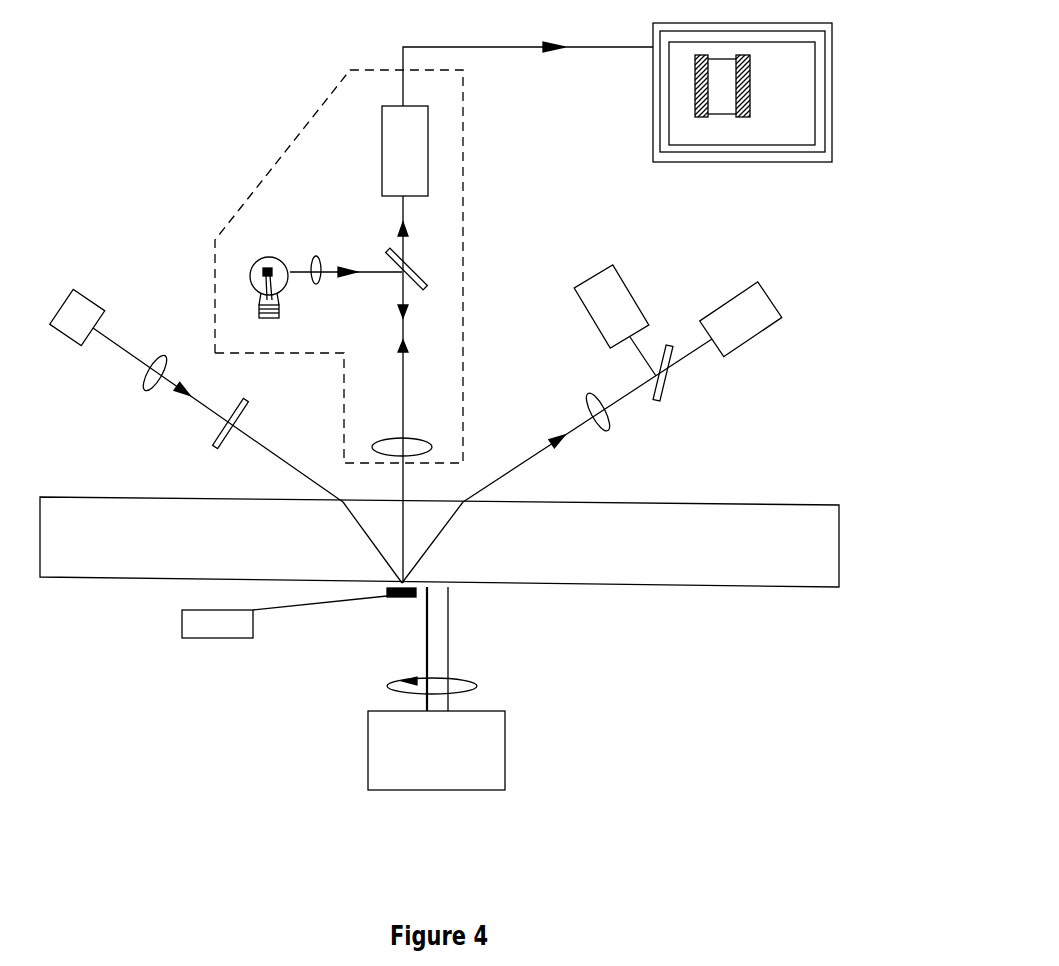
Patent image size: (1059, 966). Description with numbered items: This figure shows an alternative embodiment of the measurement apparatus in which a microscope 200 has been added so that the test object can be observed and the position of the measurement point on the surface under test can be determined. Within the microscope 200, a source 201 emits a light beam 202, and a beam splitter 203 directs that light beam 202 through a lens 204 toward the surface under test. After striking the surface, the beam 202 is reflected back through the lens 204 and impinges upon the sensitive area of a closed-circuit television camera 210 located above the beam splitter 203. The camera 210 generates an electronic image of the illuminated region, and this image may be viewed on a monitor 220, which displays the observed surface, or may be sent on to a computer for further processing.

The microscope 200 is at (263, 173).
The source 201 is at (250, 277).
The light beam 202 is at (318, 284).
The beam splitter 203 is at (382, 258).
The lens 204 is at (432, 448).
The closed-circuit television camera 210 is at (428, 171).
The monitor 220 is at (795, 165).